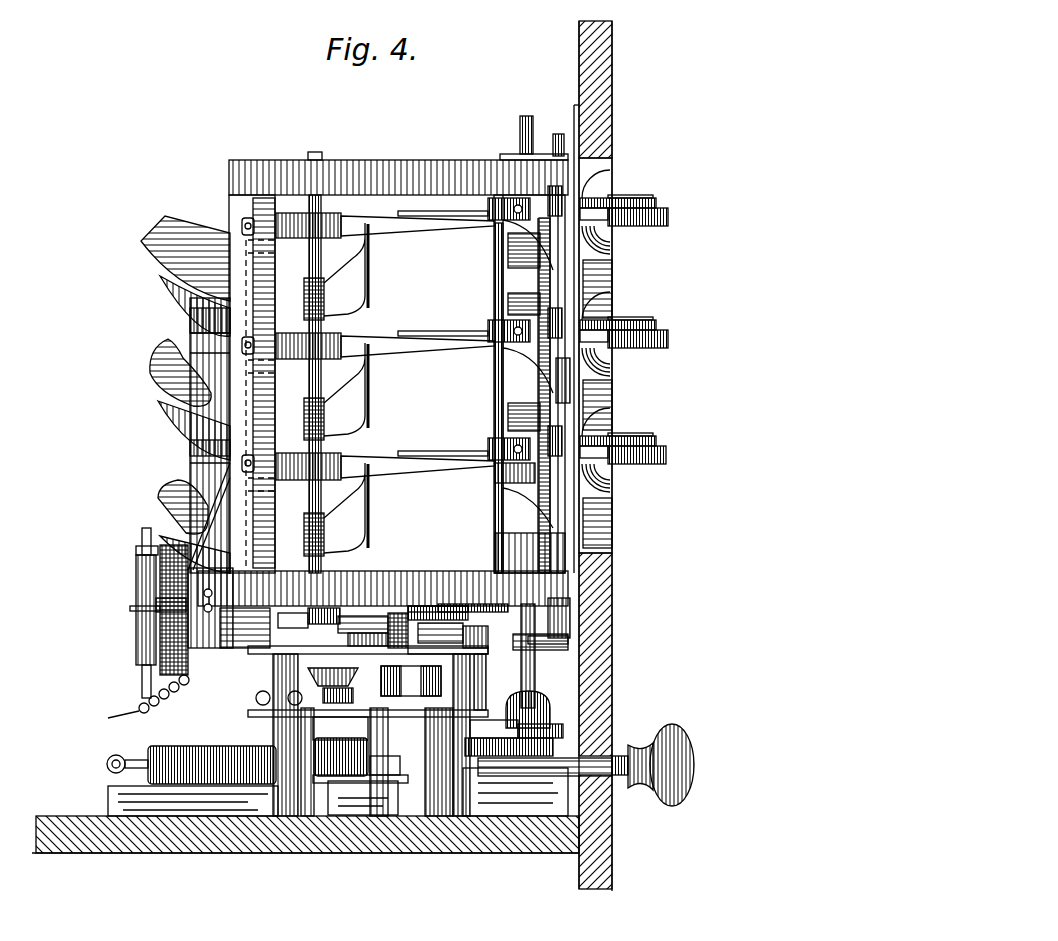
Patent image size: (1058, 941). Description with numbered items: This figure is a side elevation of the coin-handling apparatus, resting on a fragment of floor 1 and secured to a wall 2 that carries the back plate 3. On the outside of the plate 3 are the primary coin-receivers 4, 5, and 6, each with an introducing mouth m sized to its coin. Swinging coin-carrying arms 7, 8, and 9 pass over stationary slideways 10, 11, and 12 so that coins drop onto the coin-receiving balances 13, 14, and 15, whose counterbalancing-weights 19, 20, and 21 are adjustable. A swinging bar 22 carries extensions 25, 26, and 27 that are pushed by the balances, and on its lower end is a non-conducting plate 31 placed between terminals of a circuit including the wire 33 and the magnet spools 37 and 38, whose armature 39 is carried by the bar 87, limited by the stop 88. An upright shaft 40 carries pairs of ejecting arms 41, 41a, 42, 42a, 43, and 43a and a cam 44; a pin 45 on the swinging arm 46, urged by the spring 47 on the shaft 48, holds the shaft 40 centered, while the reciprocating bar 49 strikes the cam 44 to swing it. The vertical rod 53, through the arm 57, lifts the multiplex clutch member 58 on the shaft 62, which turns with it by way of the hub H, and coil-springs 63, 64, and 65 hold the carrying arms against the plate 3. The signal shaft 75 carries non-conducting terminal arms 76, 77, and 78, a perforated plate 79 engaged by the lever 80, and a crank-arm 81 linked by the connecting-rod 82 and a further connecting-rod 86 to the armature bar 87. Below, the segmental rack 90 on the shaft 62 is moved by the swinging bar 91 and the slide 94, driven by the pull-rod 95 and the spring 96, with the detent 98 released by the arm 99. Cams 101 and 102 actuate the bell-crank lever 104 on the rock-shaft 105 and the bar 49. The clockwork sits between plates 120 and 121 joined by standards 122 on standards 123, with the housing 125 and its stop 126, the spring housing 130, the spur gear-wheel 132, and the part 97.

The floor 1 is at (126, 830).
The wall 2 is at (578, 610).
The plate 3 is at (590, 250).
The primary coin-receiver 4 is at (660, 444).
The primary coin-receiver 5 is at (662, 326).
The primary coin-receiver 6 is at (662, 208).
The coin-carrying arm 7 is at (556, 436).
The coin-carrying arm 8 is at (555, 318).
The coin-carrying arm 9 is at (552, 192).
The stationary slideway 10 is at (480, 445).
The stationary slideway 11 is at (480, 324).
The stationary slideway 12 is at (480, 205).
The coin-receiving balance 13 is at (340, 458).
The coin-receiving balance 14 is at (350, 332).
The coin-receiving balance 15 is at (360, 215).
The counterbalancing-weight 19 is at (152, 498).
The counterbalancing-weight 20 is at (150, 356).
The counterbalancing-weight 21 is at (150, 245).
The swinging bar 22 is at (170, 428).
The extension 25 is at (238, 560).
The extension 26 is at (182, 446).
The extension 27 is at (182, 322).
The non-conducting plate 31 is at (210, 473).
The wire 33 is at (136, 705).
The magnet spool 37 is at (140, 538).
The magnet spool 38 is at (160, 662).
The armature 39 is at (128, 580).
The upright shaft 40 is at (304, 257).
The arm 41 is at (344, 498).
The arm 41a is at (362, 502).
The arm 42 is at (344, 378).
The arm 42a is at (362, 382).
The arm 43 is at (340, 258).
The arm 43a is at (362, 262).
The cam 44 is at (340, 608).
The pin 45 is at (290, 580).
The swinging arm 46 is at (386, 605).
The spring 47 is at (369, 651).
The shaft 48 is at (420, 598).
The reciprocating bar 49 is at (330, 604).
The vertical rod 53 is at (550, 126).
The arm 57 is at (497, 490).
The multiplex clutch member 58 is at (487, 266).
The shaft 62 is at (512, 112).
The coil-spring 63 is at (500, 408).
The coil-spring 64 is at (500, 297).
The coil-spring 65 is at (500, 238).
The vertically-disposed shaft 75 is at (556, 370).
The arm 76 is at (490, 465).
The arm 77 is at (497, 342).
The arm 78 is at (505, 188).
The plate 79 is at (510, 640).
The lever 80 is at (560, 632).
The crank-arm 81 is at (560, 598).
The connecting-rod 82 is at (496, 596).
The connecting-rod 86 is at (250, 600).
The bar 87 is at (122, 601).
The stop 88 is at (165, 600).
The segmental rack 90 is at (545, 705).
The swinging bar 91 is at (555, 722).
The reciprocating slide 94 is at (230, 785).
The pull-rod 95 is at (615, 770).
The spring 96 is at (180, 740).
The block 97 is at (360, 785).
The detent 98 is at (398, 778).
The arm 99 is at (480, 684).
The cam 101 is at (439, 630).
The cam 102 is at (460, 602).
The bell-crank lever 104 is at (470, 622).
The rock-shaft 105 is at (430, 642).
The plate 120 is at (252, 708).
The plate 121 is at (258, 646).
The standard 122 is at (265, 670).
The standard 123 is at (439, 762).
The segmentally-formed piece 125 is at (509, 747).
The stop 126 is at (500, 729).
The housing 130 is at (411, 681).
The spur gear-wheel 132 is at (345, 688).
The hub H is at (530, 553).
The mouth m is at (640, 190).